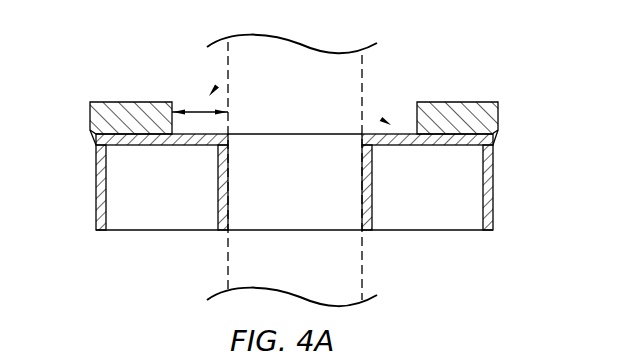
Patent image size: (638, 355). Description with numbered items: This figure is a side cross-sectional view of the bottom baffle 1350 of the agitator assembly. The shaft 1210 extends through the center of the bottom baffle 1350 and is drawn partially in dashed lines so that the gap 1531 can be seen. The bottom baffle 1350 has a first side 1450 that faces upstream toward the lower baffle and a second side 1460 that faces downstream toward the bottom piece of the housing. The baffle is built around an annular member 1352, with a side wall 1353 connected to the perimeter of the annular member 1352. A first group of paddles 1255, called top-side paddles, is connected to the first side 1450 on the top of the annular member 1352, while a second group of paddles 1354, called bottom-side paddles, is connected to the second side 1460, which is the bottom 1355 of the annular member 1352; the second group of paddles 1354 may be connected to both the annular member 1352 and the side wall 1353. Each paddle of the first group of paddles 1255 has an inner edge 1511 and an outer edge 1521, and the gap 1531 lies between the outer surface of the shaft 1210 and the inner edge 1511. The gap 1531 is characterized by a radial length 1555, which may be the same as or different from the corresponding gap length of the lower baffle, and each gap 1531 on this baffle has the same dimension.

The bottom baffle 1350 is at (100, 34).
The shaft 1210 is at (278, 57).
The inner edge 1511 is at (414, 106).
The gap 1531 is at (217, 88).
The first group of paddles 1255 is at (102, 100).
The outer edge 1521 is at (502, 113).
The radial length 1555 is at (200, 111).
The first side 1450 is at (122, 133).
The second side 1460 is at (443, 146).
The annular member 1352 is at (138, 146).
The bottom 1355 is at (181, 146).
The side wall 1353 is at (495, 188).
The second group of paddles 1354 is at (195, 203).